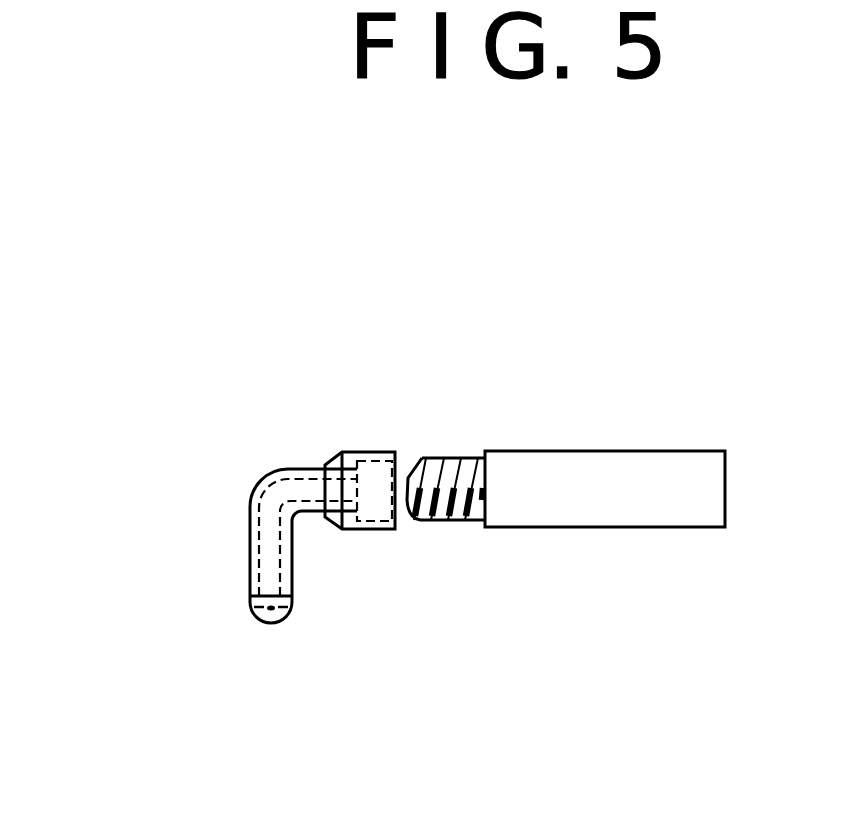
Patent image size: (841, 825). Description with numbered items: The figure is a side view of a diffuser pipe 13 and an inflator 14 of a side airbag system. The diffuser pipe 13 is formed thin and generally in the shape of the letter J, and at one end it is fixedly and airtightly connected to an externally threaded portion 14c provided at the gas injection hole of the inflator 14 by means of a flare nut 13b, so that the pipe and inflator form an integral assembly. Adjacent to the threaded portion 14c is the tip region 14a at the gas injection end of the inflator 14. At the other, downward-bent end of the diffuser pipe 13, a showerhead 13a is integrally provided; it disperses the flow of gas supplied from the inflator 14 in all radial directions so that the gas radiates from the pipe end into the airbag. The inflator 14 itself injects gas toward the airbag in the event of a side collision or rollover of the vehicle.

The diffuser pipe 13 is at (250, 552).
The showerhead 13a is at (273, 623).
The flare nut 13b is at (367, 450).
The inflator 14 is at (638, 450).
The tip of threaded portion 14a is at (398, 473).
The externally threaded portion 14c is at (456, 458).